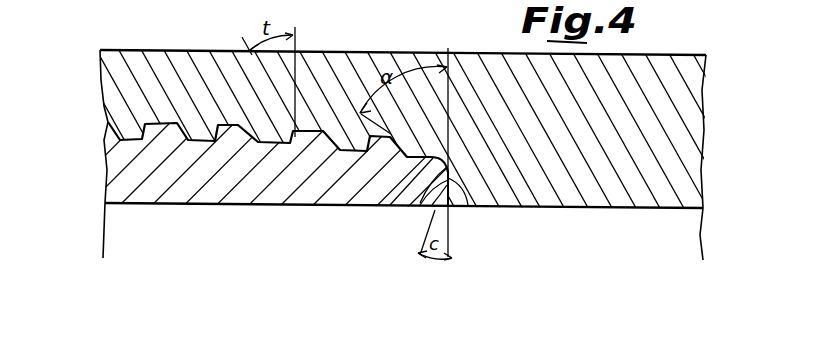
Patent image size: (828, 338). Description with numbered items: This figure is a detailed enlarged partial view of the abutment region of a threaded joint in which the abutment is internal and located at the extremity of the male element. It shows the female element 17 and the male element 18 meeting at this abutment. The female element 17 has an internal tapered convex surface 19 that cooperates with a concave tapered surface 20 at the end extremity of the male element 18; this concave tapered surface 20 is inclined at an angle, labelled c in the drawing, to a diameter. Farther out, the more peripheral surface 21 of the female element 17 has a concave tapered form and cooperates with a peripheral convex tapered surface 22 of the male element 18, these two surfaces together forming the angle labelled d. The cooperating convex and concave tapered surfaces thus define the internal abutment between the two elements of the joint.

The female element 17 is at (660, 72).
The male element 18 is at (177, 180).
The internal tapered convex surface 19 is at (468, 206).
The concave tapered surface 20 is at (415, 208).
The peripheral surface 21 is at (440, 150).
The peripheral convex tapered surface 22 is at (399, 201).